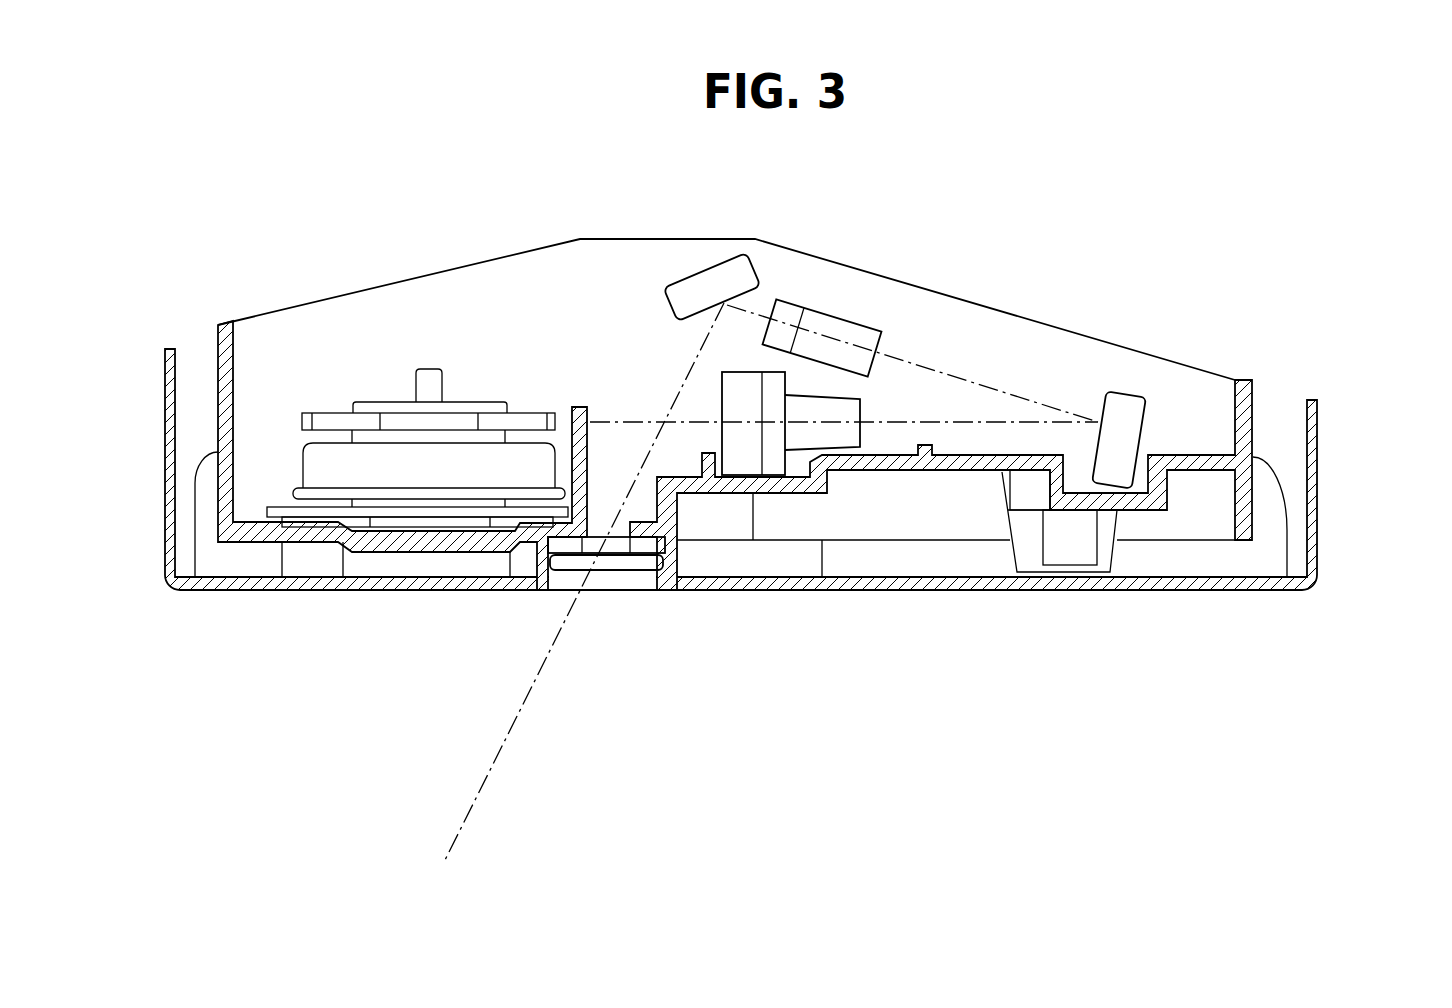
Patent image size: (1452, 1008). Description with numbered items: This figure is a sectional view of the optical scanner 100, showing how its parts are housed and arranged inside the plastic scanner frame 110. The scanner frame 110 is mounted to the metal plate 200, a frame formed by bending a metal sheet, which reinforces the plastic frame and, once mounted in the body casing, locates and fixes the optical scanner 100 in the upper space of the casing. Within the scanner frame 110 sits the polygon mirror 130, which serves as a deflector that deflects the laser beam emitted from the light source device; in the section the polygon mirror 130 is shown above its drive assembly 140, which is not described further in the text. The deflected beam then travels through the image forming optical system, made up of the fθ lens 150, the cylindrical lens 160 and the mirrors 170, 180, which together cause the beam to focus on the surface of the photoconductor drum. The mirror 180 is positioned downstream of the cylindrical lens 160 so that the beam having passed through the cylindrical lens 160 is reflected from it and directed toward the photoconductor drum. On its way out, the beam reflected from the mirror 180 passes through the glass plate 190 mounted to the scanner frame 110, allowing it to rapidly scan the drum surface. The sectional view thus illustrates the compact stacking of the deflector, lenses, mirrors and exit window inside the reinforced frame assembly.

The optical scanner 100 is at (743, 513).
The scanner frame 110 is at (224, 386).
The polygon mirror 130 is at (342, 422).
The motor body 140 is at (287, 473).
The fθ lens 150 is at (838, 437).
The cylindrical lens 160 is at (838, 320).
The mirror 170 is at (1127, 400).
The mirror 180 is at (707, 278).
The glass plate 190 is at (627, 563).
The metal plate 200 is at (1313, 446).